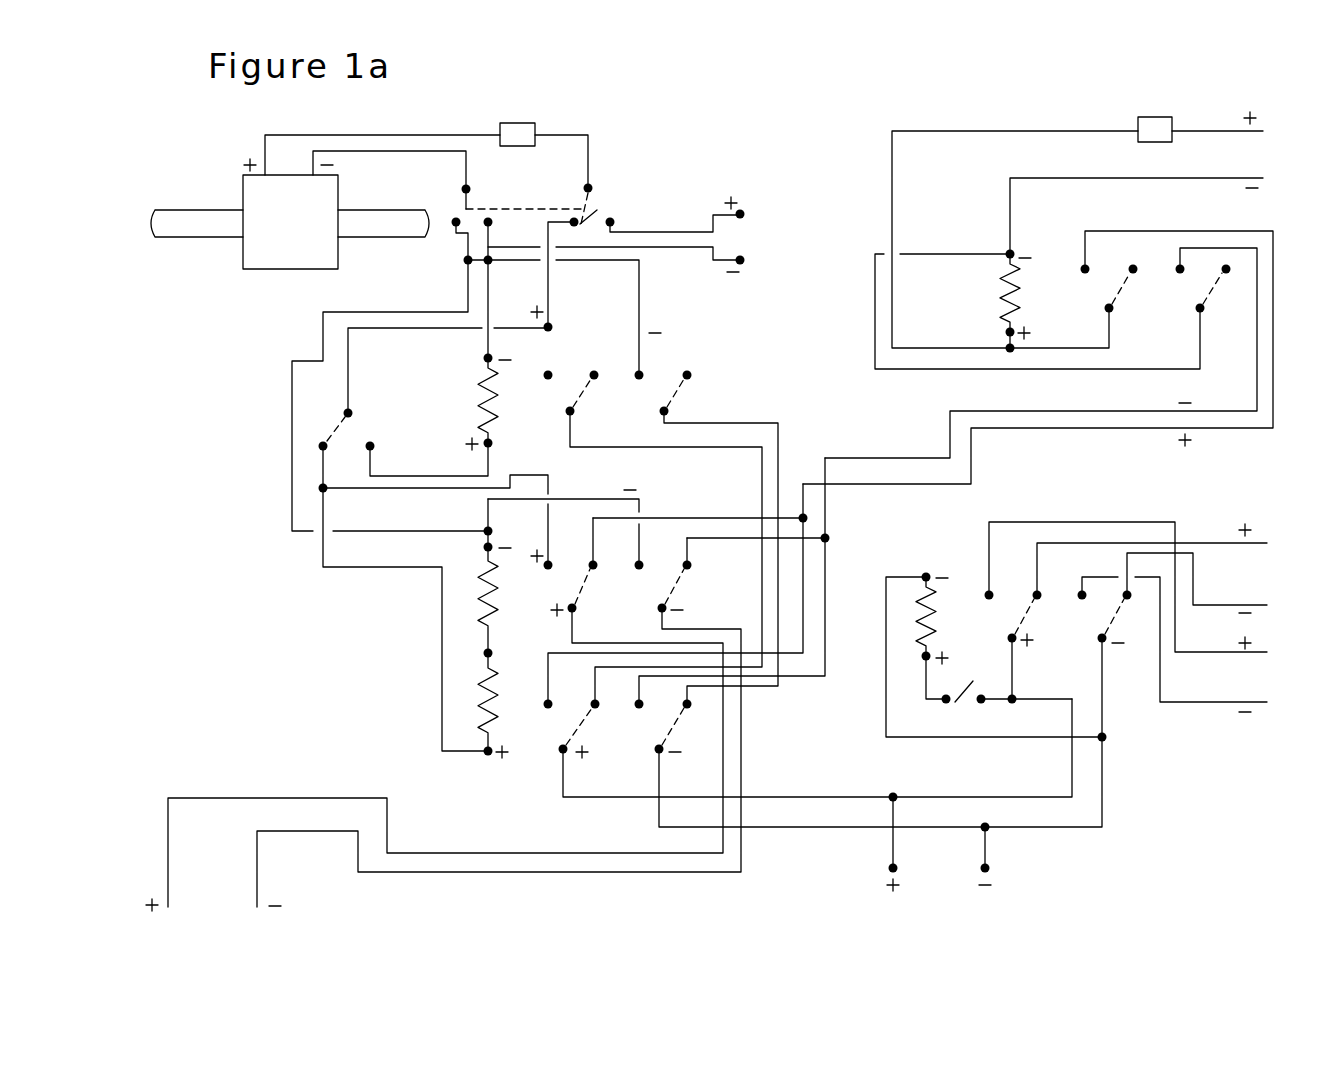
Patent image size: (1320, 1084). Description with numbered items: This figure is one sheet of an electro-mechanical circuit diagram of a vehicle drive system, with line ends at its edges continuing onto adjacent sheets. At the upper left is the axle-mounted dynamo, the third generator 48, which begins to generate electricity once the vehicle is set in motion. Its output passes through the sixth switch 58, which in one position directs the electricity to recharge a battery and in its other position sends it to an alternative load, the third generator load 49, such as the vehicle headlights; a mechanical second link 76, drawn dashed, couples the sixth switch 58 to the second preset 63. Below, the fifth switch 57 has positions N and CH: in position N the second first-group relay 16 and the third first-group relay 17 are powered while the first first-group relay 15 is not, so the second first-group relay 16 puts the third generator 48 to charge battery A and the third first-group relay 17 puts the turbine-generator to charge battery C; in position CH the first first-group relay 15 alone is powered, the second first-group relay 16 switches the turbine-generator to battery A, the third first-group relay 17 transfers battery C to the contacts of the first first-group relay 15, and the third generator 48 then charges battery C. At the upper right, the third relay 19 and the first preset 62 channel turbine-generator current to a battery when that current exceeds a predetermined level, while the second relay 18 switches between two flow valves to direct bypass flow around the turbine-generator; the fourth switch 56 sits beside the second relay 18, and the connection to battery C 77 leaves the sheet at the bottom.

The relay 1a 15 is at (475, 404).
The relay 1b 16 is at (474, 608).
The relay 1c 17 is at (477, 707).
The relay 2 18 is at (937, 572).
The relay 3 19 is at (994, 290).
The generator 3 48 is at (280, 258).
The generator 3 load 49 is at (750, 233).
The switch s4 56 is at (964, 704).
The switch s5 57 is at (326, 418).
The switch s6 58 is at (600, 210).
The preset 1 62 is at (1157, 110).
The preset 2 63 is at (530, 118).
The link 2 76 is at (534, 199).
The connection to battery c 77 is at (936, 886).